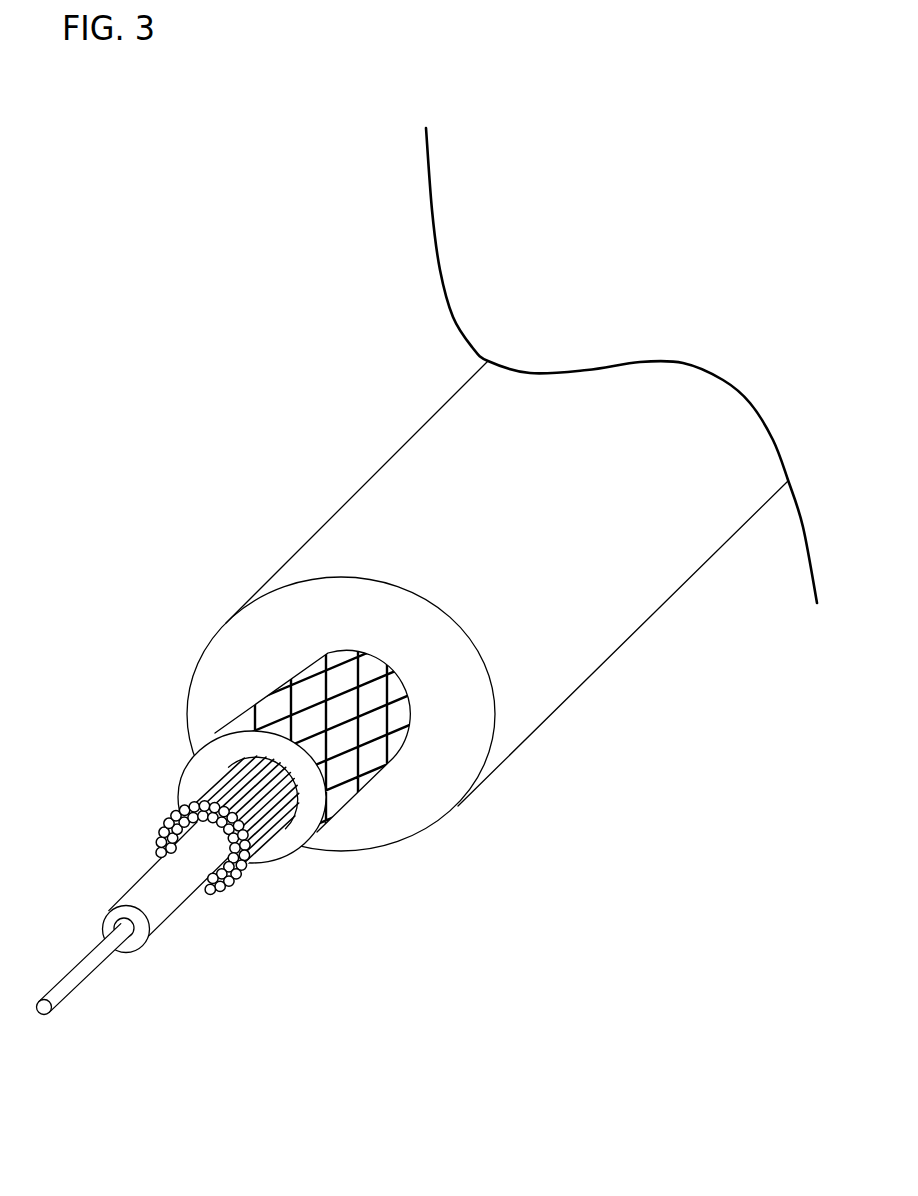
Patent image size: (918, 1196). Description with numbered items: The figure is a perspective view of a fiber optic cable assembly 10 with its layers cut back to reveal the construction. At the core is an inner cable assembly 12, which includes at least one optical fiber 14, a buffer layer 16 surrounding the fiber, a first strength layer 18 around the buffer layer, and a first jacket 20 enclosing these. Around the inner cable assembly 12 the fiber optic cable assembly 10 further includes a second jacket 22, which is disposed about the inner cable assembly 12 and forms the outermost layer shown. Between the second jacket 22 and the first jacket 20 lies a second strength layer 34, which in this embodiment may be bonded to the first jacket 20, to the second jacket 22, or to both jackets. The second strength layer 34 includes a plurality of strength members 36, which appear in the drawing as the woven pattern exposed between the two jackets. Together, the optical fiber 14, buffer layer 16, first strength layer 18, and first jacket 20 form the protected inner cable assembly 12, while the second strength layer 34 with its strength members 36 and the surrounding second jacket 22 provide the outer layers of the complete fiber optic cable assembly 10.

The fiber optic cable assembly 10 is at (427, 579).
The inner cable assembly 12 is at (181, 893).
The optical fiber 14 is at (90, 975).
The buffer layer 16 is at (168, 903).
The first strength layer 18 is at (178, 812).
The first jacket 20 is at (205, 765).
The second jacket 22 is at (403, 815).
The second strength layer 34 is at (287, 753).
The strength members 36 is at (320, 670).